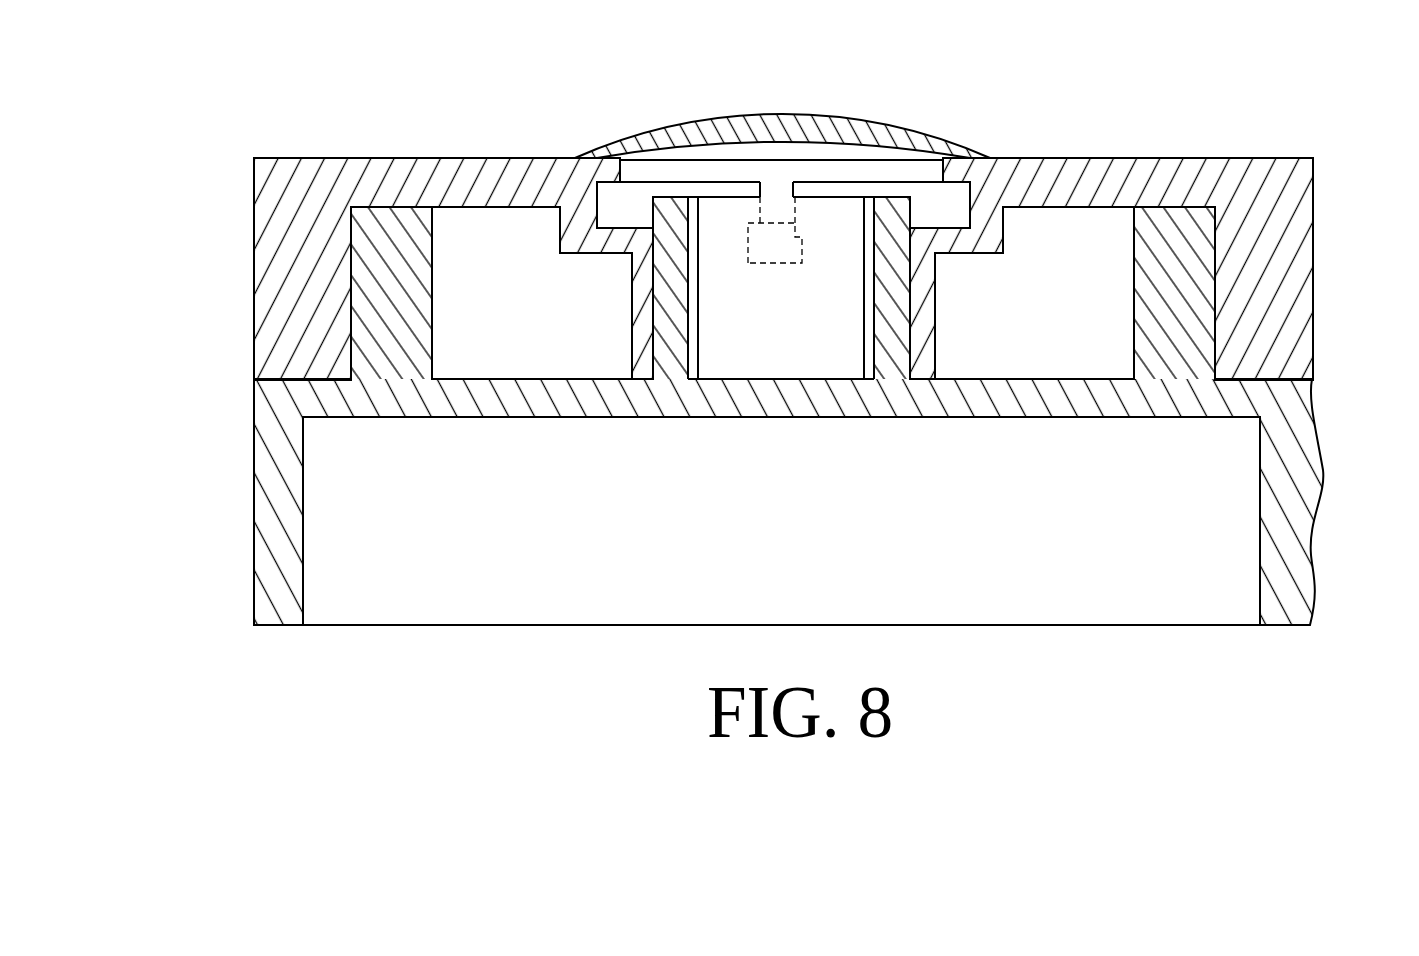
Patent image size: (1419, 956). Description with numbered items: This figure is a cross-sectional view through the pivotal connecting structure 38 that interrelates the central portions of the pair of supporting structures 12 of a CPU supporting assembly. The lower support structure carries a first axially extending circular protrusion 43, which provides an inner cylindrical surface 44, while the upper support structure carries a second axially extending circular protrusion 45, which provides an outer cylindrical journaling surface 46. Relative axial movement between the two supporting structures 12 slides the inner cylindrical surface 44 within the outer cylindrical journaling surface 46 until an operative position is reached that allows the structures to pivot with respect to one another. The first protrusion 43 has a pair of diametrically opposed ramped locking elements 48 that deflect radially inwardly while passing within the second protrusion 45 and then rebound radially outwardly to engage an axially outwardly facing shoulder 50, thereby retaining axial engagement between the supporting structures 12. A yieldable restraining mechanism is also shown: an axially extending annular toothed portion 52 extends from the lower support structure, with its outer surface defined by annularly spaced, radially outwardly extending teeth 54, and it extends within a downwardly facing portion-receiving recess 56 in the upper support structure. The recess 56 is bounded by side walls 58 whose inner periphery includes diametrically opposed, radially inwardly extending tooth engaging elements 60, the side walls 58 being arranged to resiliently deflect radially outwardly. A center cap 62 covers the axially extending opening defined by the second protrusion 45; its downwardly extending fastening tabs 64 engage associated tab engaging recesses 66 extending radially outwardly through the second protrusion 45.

The supporting structure 12 is at (1290, 157).
The pivotal connecting structure 38 is at (172, 128).
The first axially extending circular protrusion 43 is at (655, 381).
The inner cylindrical surface 44 is at (918, 332).
The second axially extending circular protrusion 45 is at (936, 325).
The outer cylindrical journaling surface 46 is at (912, 330).
The ramped locking element 48 is at (657, 221).
The axially outwardly facing shoulder 50 is at (598, 237).
The annular toothed portion 52 is at (340, 347).
The tooth 54 is at (390, 330).
The portion-receiving recess 56 is at (443, 240).
The side wall 58 is at (288, 285).
The tooth engaging element 60 is at (345, 237).
The center cap 62 is at (853, 142).
The fastening tab 64 is at (773, 195).
The tab engaging recess 66 is at (802, 240).